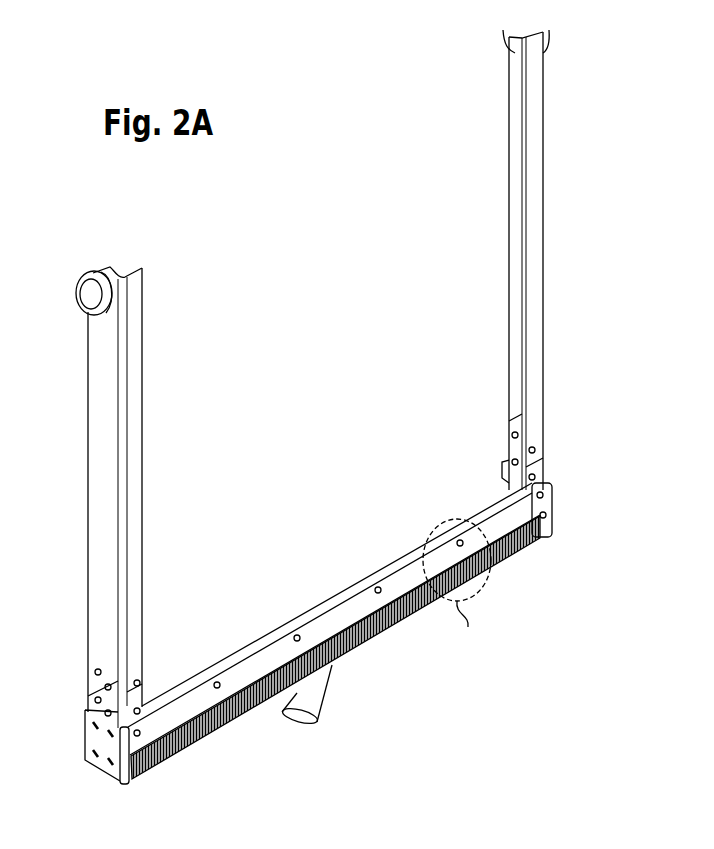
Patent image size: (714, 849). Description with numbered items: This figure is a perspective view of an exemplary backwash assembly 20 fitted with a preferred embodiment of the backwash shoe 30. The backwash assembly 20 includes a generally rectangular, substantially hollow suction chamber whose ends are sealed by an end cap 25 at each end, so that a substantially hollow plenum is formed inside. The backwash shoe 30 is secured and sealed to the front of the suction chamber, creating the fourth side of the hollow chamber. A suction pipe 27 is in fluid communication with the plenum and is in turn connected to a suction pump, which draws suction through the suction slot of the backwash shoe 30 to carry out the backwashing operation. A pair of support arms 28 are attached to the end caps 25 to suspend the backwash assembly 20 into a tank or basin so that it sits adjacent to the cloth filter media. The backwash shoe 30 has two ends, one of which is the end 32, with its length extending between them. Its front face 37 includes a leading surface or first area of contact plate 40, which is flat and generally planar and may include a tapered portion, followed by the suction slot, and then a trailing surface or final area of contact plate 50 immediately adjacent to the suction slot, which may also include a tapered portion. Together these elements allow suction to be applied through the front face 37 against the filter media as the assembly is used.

The backwash assembly 20 is at (552, 376).
The end cap 25 is at (102, 742).
The suction pipe 27 is at (308, 705).
The support arms 28 is at (543, 122).
The backwash shoe 30 is at (567, 522).
The end of backwash shoe 32 is at (117, 775).
The front face 37 is at (553, 498).
The leading surface plate 40 is at (342, 628).
The trailing surface plate 50 is at (493, 567).